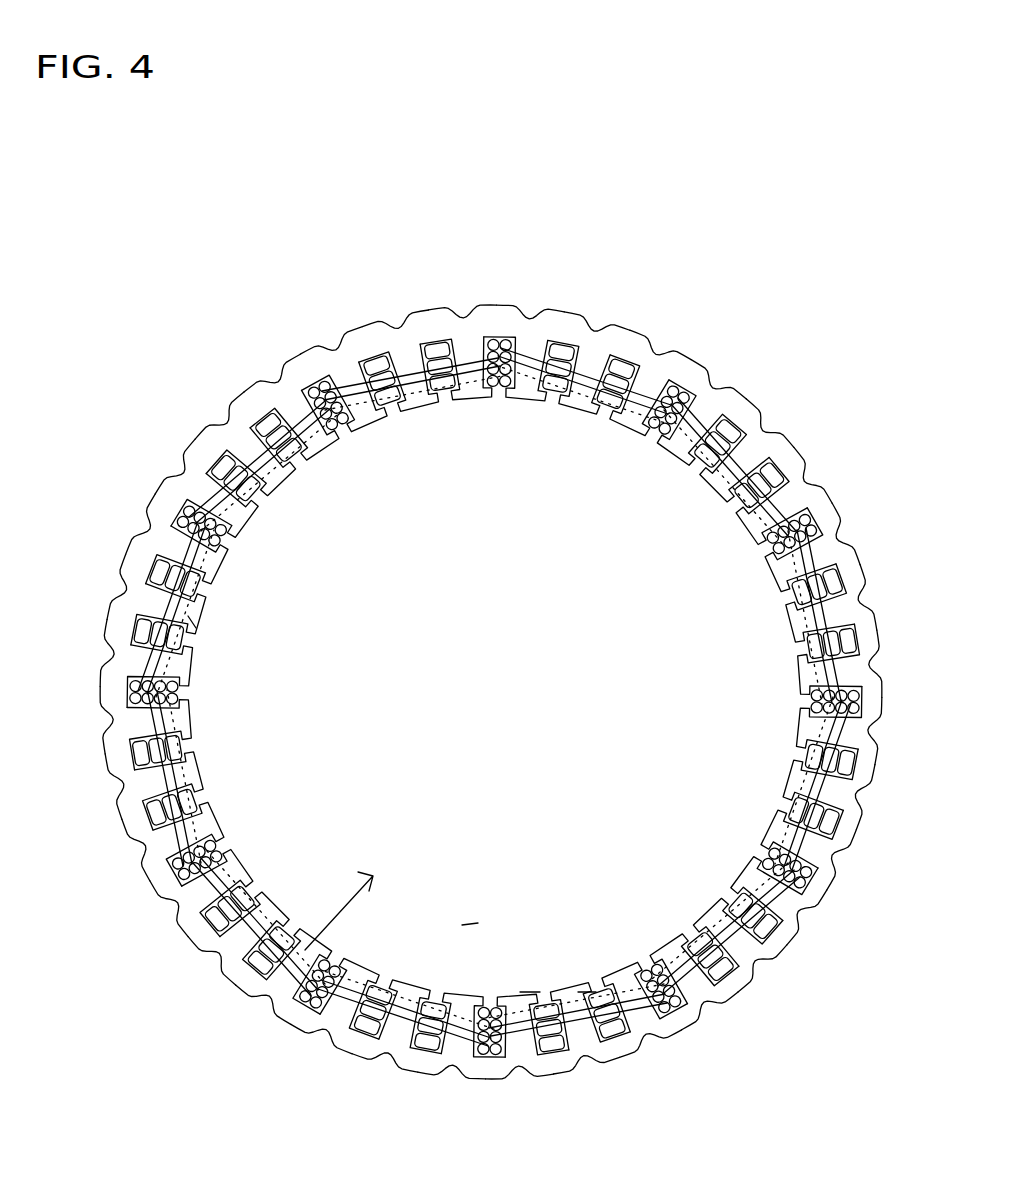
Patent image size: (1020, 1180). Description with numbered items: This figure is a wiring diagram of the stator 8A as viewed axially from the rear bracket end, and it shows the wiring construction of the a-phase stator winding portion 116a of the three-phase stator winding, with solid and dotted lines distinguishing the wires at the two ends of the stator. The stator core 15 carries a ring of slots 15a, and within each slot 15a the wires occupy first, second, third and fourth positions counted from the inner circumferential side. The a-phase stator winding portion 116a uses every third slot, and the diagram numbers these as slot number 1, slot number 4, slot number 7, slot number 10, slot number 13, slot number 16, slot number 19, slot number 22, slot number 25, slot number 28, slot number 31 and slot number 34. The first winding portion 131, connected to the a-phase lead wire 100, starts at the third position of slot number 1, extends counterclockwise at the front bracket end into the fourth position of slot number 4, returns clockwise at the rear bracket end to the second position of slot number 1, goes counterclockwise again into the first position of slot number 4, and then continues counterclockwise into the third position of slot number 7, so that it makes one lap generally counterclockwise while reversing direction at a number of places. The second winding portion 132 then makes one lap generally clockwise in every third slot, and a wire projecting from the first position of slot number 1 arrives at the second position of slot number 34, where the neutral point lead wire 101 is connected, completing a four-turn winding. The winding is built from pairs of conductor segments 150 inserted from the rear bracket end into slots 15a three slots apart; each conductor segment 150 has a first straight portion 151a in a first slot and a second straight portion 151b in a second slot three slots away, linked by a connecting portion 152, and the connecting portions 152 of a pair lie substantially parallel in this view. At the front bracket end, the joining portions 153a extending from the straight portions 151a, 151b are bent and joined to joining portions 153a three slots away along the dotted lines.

The stator 8A is at (437, 240).
The slot number 1 is at (473, 1006).
The slot number 4 is at (643, 976).
The slot number 7 is at (774, 874).
The slot number 10 is at (812, 716).
The slot number 13 is at (786, 551).
The slot number 16 is at (677, 427).
The slot number 19 is at (515, 384).
The slot number 22 is at (345, 416).
The slot number 25 is at (220, 525).
The slot number 28 is at (183, 683).
The slot number 31 is at (210, 844).
The slot number 34 is at (318, 964).
The stator core 15 is at (787, 500).
The slot 15a is at (843, 534).
The a-phase lead wire 100 is at (466, 985).
The neutral point lead wire 101 is at (352, 886).
The a-phase stator winding portion 116a is at (192, 622).
The first winding portion 131 is at (585, 988).
The second winding portion 132 is at (528, 988).
The conductor segment 150 is at (268, 450).
The first straight portion 151a is at (503, 335).
The second straight portion 151b is at (663, 383).
The connecting portion 152 is at (571, 488).
The joining portion 153a is at (548, 328).